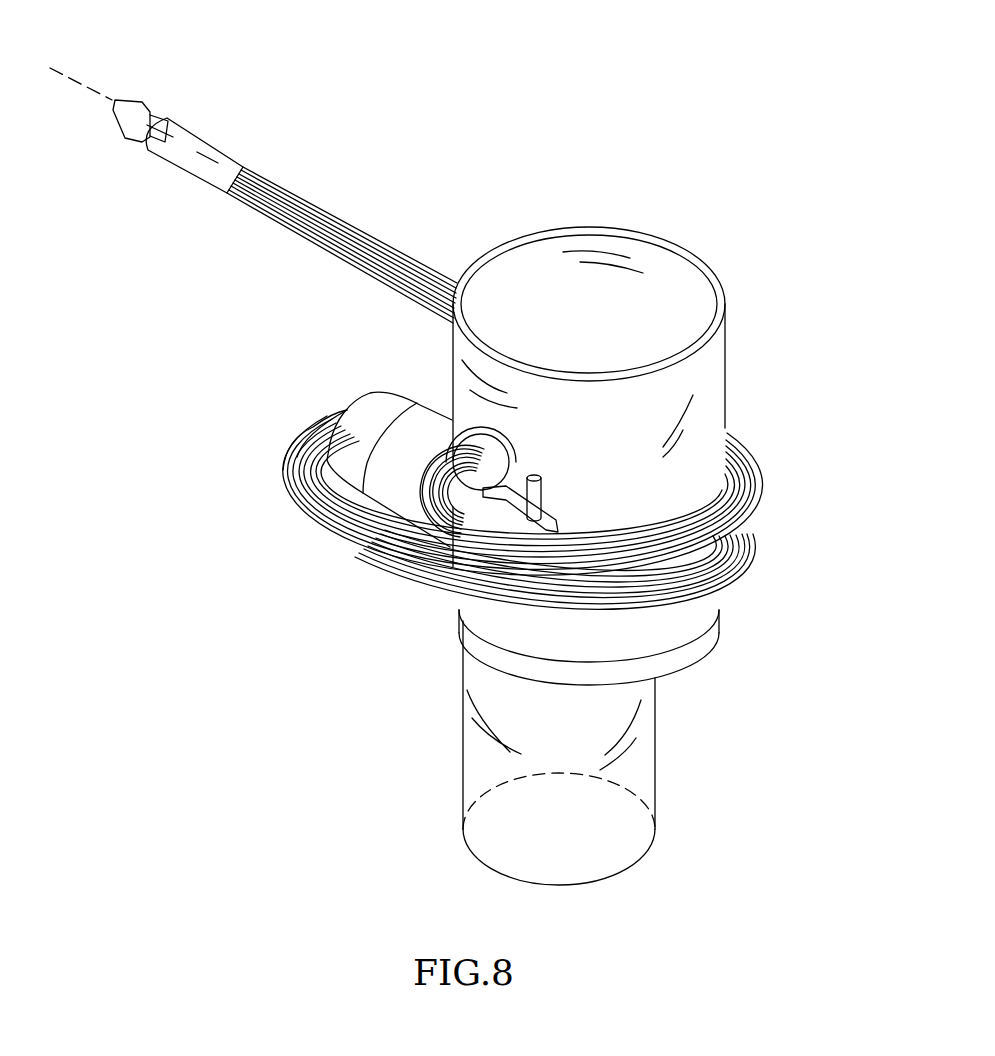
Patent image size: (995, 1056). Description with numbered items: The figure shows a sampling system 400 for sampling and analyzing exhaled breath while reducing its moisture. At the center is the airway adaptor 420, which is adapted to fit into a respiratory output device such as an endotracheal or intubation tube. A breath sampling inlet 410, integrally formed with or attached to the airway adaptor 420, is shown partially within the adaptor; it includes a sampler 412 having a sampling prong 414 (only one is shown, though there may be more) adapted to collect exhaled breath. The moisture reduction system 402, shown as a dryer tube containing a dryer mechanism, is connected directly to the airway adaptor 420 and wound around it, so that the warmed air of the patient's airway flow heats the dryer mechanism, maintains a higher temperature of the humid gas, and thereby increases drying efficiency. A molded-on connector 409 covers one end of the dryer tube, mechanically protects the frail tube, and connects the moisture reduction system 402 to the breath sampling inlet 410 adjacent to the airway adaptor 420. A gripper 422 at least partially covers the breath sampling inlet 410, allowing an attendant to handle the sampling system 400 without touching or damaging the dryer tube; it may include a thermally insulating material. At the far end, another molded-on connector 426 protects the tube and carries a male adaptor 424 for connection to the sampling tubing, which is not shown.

The sampling system 400 is at (602, 182).
The airway adaptor 420 is at (740, 366).
The breath sampling inlet 410 is at (492, 462).
The sampling prong 414 is at (537, 500).
The sampler 412 is at (567, 527).
The moisture reduction system 402 is at (308, 552).
The gripper 422 is at (378, 405).
The molded-on connector 409 is at (325, 425).
The molded-on connector 426 is at (223, 133).
The male adaptor 424 is at (137, 97).